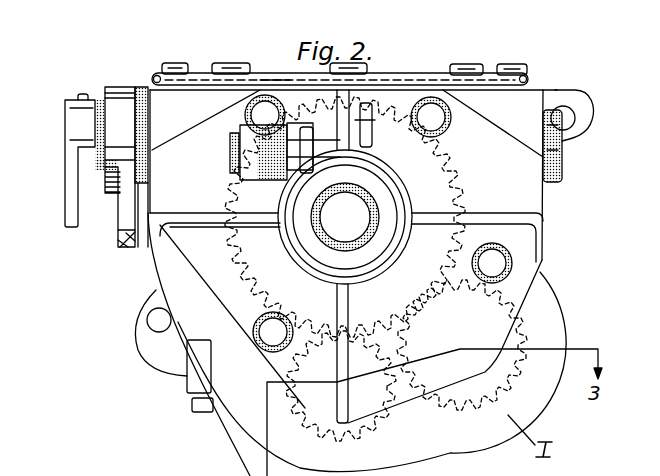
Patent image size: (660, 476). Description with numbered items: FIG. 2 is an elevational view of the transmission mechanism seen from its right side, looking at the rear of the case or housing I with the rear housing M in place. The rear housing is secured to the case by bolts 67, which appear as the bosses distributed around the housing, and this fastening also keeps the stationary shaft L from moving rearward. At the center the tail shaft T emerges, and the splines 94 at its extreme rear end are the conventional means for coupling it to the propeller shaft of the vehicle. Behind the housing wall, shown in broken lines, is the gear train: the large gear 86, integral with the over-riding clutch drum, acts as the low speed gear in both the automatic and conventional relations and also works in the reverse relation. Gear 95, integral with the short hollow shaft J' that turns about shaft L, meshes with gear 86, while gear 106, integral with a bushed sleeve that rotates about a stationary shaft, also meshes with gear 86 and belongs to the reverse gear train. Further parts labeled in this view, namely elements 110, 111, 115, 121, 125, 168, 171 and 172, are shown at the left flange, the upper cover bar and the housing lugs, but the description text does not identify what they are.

The flange lip 125 is at (85, 95).
The housing wall 115 is at (146, 86).
The cap screws 172 is at (205, 64).
The cover bar 171 is at (273, 78).
The mounting lug 168 is at (567, 116).
The bolts 67 is at (270, 114).
The splines 94 is at (376, 210).
The boss 121 is at (562, 172).
The flange 110 is at (70, 200).
The hub 111 is at (127, 213).
The gear 86 is at (232, 252).
The gear 106 is at (527, 327).
The gear 95 is at (392, 432).